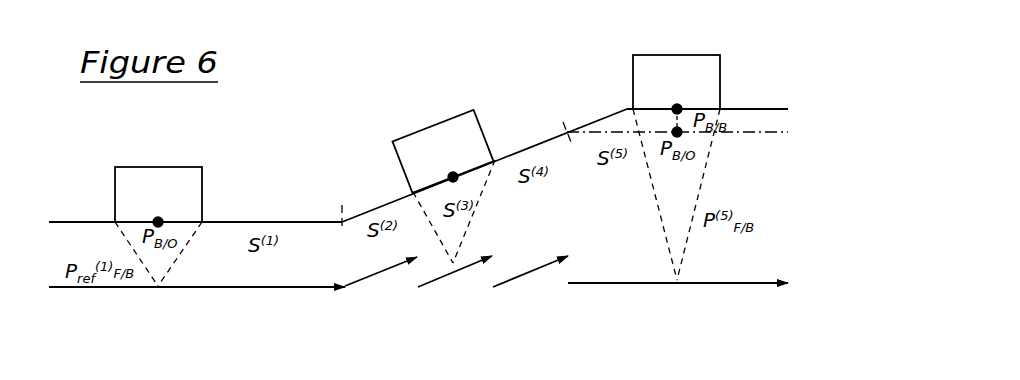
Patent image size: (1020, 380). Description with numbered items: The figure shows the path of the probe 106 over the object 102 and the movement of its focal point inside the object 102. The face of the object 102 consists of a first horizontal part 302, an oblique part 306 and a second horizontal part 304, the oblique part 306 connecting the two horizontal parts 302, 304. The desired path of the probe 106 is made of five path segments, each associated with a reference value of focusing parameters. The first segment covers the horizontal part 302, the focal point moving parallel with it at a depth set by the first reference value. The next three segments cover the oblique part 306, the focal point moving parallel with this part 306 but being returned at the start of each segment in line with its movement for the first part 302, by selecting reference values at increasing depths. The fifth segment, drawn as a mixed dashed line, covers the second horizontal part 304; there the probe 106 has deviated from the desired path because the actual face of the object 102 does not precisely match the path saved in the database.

The probe 106 is at (142, 203).
The object 102 is at (212, 367).
The first horizontal part 302 is at (245, 210).
The oblique part 306 is at (502, 110).
The second horizontal part 304 is at (785, 95).